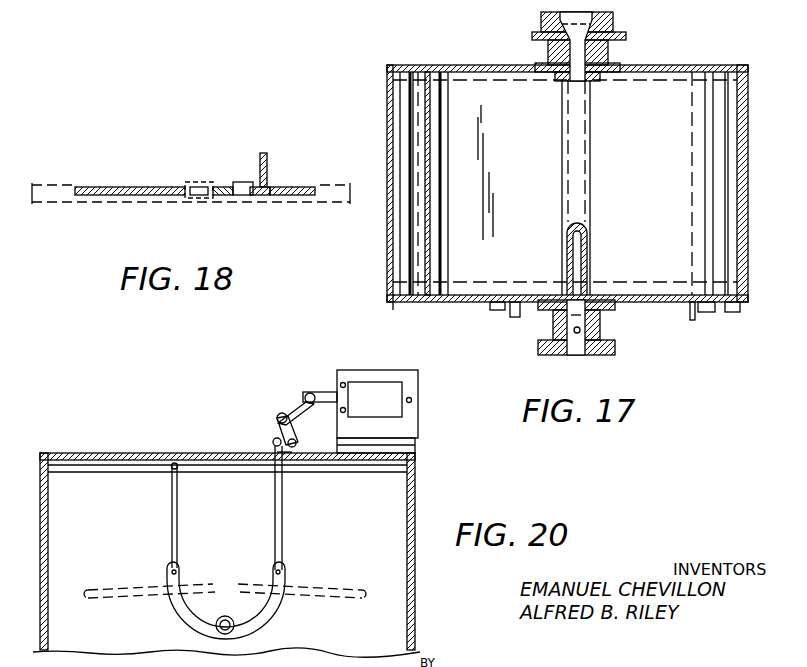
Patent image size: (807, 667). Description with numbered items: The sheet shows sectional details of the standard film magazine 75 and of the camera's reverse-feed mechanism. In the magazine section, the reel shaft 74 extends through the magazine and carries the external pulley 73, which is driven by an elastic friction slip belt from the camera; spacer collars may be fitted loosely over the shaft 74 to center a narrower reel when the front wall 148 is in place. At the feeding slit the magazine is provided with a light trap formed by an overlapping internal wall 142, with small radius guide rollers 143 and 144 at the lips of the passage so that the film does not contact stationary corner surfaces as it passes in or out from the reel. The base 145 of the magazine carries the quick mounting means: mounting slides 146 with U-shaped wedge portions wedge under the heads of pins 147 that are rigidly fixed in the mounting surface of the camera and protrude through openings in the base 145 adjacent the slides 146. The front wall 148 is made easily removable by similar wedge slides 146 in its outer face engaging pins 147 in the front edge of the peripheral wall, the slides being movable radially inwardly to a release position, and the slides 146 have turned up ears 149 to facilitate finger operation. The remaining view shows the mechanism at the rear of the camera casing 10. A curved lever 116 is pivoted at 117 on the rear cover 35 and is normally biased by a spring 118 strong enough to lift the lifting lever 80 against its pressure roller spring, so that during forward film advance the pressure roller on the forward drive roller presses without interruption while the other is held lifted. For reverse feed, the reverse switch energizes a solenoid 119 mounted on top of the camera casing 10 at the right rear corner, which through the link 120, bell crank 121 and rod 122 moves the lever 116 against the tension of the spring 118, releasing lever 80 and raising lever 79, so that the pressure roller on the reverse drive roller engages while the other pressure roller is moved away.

In FIG. 18, the camera casing 10 is at (62, 183).
In FIG. 20, the camera casing 10 is at (110, 453).
In FIG. 20, the rear cover 35 is at (212, 487).
In FIG. 17, the external pulley 73 is at (613, 18).
In FIG. 17, the reel shaft 74 is at (587, 198).
In FIG. 17, the film magazine 75 is at (683, 68).
In FIG. 20, the lifting lever 79 is at (122, 600).
In FIG. 20, the lifting lever 80 is at (322, 590).
In FIG. 20, the curved lever 116 is at (258, 624).
In FIG. 20, the pivot 117 is at (215, 634).
In FIG. 20, the spring 118 is at (172, 525).
In FIG. 20, the solenoid 119 is at (343, 375).
In FIG. 20, the link 120 is at (295, 398).
In FIG. 20, the bell crank 121 is at (274, 430).
In FIG. 20, the rod 122 is at (282, 527).
In FIG. 17, the overlapping internal wall 142 is at (430, 208).
In FIG. 17, the guide roller 143 is at (405, 241).
In FIG. 17, the guide roller 144 is at (442, 246).
In FIG. 17, the base 145 is at (393, 304).
In FIG. 18, the base 145 is at (138, 187).
In FIG. 17, the mounting slide 146 is at (706, 312).
In FIG. 18, the mounting slide 146 is at (218, 187).
In FIG. 17, the pin 147 is at (490, 306).
In FIG. 18, the pin 147 is at (195, 182).
In FIG. 17, the front wall 148 is at (658, 305).
In FIG. 17, the turned up ear 149 is at (513, 318).
In FIG. 18, the turned up ear 149 is at (267, 160).